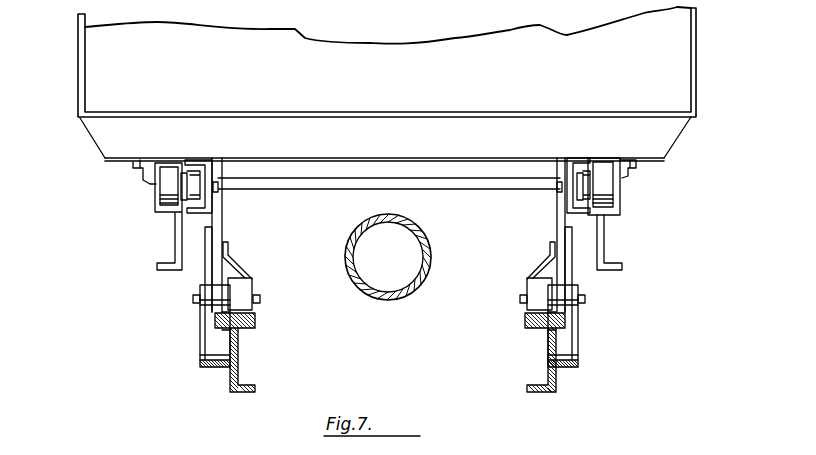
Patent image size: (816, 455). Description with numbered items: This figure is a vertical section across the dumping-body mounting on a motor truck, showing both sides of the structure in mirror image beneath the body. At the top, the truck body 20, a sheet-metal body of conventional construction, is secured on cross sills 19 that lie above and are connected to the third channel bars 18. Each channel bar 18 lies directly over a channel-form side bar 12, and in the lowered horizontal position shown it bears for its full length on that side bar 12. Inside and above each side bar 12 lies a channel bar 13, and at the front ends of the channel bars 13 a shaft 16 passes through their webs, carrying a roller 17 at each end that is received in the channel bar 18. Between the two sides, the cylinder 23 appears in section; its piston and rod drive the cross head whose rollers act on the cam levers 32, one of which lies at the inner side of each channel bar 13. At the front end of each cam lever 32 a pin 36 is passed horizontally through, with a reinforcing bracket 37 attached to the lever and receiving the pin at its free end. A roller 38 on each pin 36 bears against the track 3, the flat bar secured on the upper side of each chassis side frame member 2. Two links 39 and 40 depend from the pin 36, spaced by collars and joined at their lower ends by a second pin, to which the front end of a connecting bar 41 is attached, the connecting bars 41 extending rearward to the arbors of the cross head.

The chassis side frame member 2 is at (240, 362).
The track 3 is at (255, 325).
The side bar 12 is at (178, 245).
The channel bar 13 is at (210, 158).
The rod or shaft 16 is at (358, 182).
The roller 17 is at (160, 206).
The third channel bar 18 is at (170, 193).
The cross sill 19 is at (343, 130).
The truck body 20 is at (90, 43).
The cylinder 23 is at (428, 237).
The cam lever 32 is at (222, 225).
The pin 36 is at (260, 298).
The reinforcing bracket 37 is at (238, 267).
The roller 38 is at (237, 290).
The link 39 is at (227, 332).
The link 40 is at (210, 318).
The connecting bar 41 is at (210, 260).